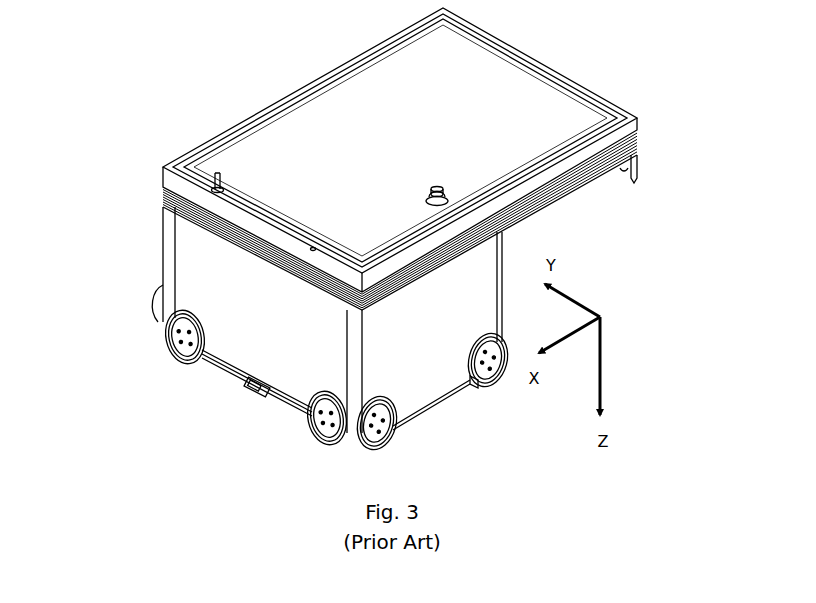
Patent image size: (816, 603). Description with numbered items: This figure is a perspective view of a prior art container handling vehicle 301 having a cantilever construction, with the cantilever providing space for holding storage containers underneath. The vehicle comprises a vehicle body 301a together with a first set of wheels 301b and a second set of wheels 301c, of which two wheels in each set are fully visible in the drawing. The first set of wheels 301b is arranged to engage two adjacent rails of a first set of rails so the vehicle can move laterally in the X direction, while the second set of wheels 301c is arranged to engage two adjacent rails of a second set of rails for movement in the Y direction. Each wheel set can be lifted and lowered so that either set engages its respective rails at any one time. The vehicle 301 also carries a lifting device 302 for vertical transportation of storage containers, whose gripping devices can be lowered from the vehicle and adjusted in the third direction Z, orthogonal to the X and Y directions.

The container handling vehicle 301 is at (184, 84).
The vehicle body 301a is at (168, 187).
The first set of wheels 301b is at (464, 412).
The second set of wheels 301c is at (208, 396).
The lifting device 302 is at (633, 192).